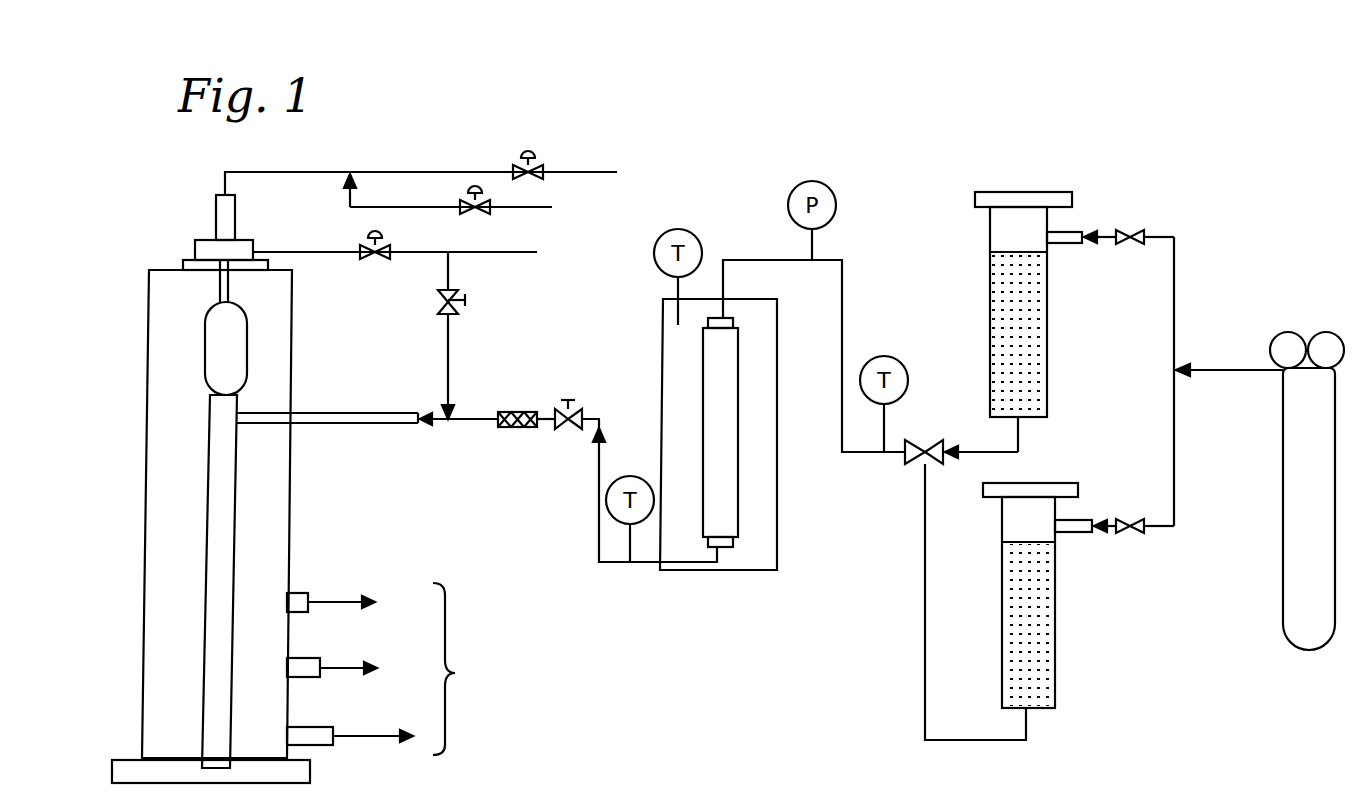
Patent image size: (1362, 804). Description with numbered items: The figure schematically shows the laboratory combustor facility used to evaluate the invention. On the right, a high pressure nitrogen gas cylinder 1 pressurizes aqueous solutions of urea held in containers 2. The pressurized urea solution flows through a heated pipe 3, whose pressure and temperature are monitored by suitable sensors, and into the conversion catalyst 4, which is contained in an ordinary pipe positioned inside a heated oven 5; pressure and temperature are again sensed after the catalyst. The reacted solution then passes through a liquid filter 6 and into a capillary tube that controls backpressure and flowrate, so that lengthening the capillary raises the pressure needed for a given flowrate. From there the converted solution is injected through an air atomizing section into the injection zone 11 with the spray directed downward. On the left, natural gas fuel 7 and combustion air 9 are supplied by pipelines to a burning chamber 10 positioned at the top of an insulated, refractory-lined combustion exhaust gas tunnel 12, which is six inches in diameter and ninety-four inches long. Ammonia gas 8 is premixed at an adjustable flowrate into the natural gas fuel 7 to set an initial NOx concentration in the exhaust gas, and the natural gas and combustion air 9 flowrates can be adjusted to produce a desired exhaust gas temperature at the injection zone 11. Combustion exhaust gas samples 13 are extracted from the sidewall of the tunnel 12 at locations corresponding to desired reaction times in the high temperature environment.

The high pressure nitrogen gas cylinder 1 is at (1283, 506).
The containers 2 is at (1055, 624).
The heated pipe 3 is at (842, 334).
The conversion catalyst 4 is at (728, 480).
The heated oven 5 is at (776, 552).
The liquid filter 6 is at (525, 412).
The natural gas fuel 7 is at (573, 166).
The ammonia gas 8 is at (520, 207).
The combustion air 9 is at (503, 262).
The burning chamber 10 is at (205, 342).
The injection zone 11 is at (210, 415).
The insulated combustion exhaust gas tunnel 12 is at (203, 645).
The combustion exhaust gas samples 13 is at (534, 669).